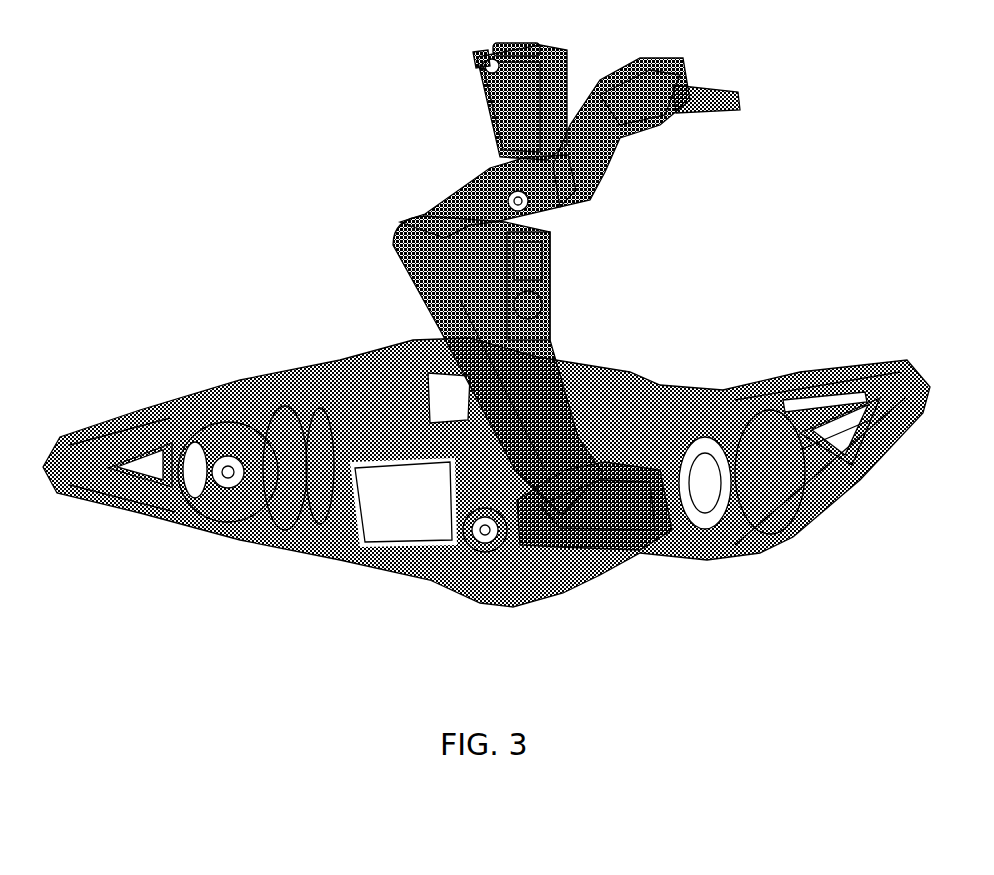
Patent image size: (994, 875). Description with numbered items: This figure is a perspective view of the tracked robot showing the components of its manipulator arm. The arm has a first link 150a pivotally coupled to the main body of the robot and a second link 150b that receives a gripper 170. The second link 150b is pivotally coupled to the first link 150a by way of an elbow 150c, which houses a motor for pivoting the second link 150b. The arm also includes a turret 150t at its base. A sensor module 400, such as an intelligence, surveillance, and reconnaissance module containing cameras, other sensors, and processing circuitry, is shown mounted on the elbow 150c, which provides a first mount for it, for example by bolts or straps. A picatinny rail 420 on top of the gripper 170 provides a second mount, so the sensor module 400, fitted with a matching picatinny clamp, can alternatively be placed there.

The picatinny rail 420 is at (526, 44).
The gripper 170 is at (481, 97).
The elbow 150c is at (453, 215).
The first link 150a is at (412, 297).
The second link 150b is at (581, 196).
The sensor module 400 is at (550, 290).
The turret 150t is at (614, 478).